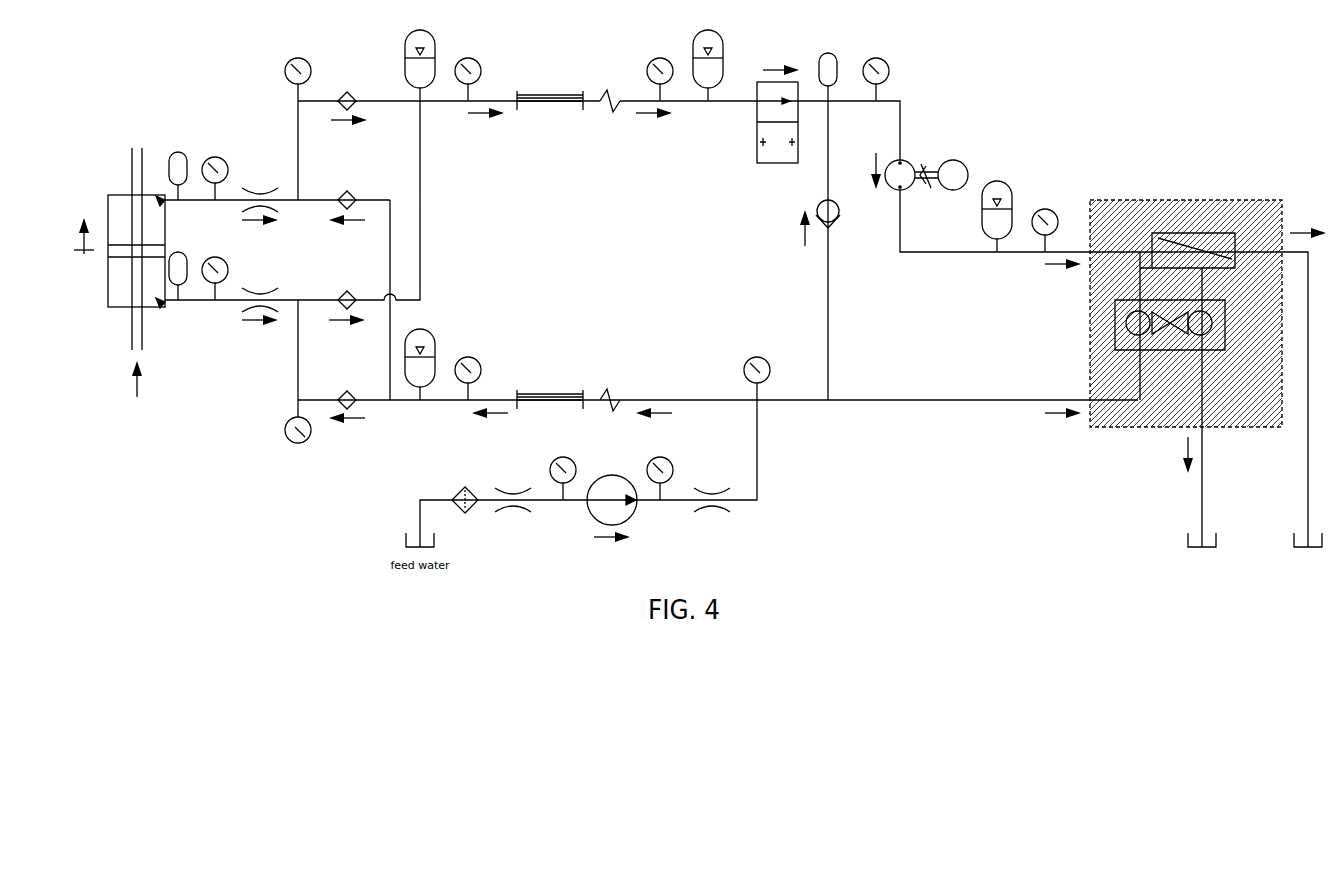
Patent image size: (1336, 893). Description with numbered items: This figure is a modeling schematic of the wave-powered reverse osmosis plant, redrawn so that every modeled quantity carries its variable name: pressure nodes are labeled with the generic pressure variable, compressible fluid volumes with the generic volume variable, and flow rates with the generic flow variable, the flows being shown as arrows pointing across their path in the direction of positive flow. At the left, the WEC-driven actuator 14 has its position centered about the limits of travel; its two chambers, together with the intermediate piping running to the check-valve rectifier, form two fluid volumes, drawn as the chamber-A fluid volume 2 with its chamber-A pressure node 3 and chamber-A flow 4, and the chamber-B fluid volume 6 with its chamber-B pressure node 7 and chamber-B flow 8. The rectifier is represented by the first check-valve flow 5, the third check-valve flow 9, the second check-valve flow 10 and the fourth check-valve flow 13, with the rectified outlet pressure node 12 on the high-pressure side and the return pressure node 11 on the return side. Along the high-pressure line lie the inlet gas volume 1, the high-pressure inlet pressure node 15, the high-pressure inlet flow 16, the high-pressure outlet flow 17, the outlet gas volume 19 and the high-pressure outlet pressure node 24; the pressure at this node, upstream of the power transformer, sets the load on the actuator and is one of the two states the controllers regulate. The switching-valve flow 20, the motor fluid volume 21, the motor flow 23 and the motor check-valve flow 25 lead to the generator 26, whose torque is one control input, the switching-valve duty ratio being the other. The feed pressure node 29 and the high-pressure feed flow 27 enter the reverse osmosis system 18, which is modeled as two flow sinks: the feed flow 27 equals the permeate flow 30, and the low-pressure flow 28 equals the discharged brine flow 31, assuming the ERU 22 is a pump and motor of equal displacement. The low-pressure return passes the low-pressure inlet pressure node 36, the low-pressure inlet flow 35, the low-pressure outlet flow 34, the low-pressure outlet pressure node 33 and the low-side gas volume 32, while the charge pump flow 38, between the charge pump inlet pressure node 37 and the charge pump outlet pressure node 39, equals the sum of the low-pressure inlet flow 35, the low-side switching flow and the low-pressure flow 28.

The hydraulic cylinder (x, F) 1 is at (113, 287).
The accumulator V_A 2 is at (178, 167).
The pressure sensor p_A 3 is at (215, 171).
The orifice, flow q_A 4 is at (260, 217).
The check valve, flow q_c1 5 is at (347, 218).
The accumulator V_B 6 is at (178, 267).
The pressure sensor p_B 7 is at (215, 271).
The orifice, flow q_B 8 is at (260, 317).
The check valve, flow q_c3 9 is at (347, 318).
The check valve, flow q_c2 10 is at (347, 417).
The pressure sensor p_B,out 11 is at (297, 431).
The pressure sensor p_A,out 12 is at (298, 72).
The check valve, flow q_c4 13 is at (349, 118).
The WEC-driven actuator 14 is at (419, 56).
The pressure sensor p_H,in 15 is at (468, 71).
The flow q_H,in 16 is at (486, 122).
The flow q_H,out 17 is at (654, 122).
The reverse osmosis system 18 is at (659, 71).
The gas accumulator V_gas,H,out 19 is at (708, 53).
The directional valve, flow q_m,h 20 is at (778, 105).
The accumulator V_m 21 is at (828, 69).
The ERU 22 is at (876, 71).
The hydraulic motor, flow q_m 23 is at (882, 171).
The generator, speed omega_gen 24 is at (941, 167).
The check valve, flow q_m,c1 25 is at (804, 223).
The generator 26 is at (1045, 218).
The flow q_RO 27 is at (1063, 273).
The flow q_RO,in 28 is at (1063, 424).
The RO system 29 is at (1186, 364).
The permeate outlet, flow q_perm 30 is at (1313, 391).
The brine outlet, flow q_brine 31 is at (1178, 504).
The gas accumulator V_gas,L,out 32 is at (428, 353).
The pressure sensor p_L,out 33 is at (473, 371).
The flow q_L,out 34 is at (492, 424).
The flow q_L,in 35 is at (654, 424).
The pressure sensor p_L,in 36 is at (757, 371).
The pressure sensor p_cp,in 37 is at (546, 478).
The charge pump, flow q_cp 38 is at (612, 518).
The pressure sensor p_cp,out 39 is at (677, 478).